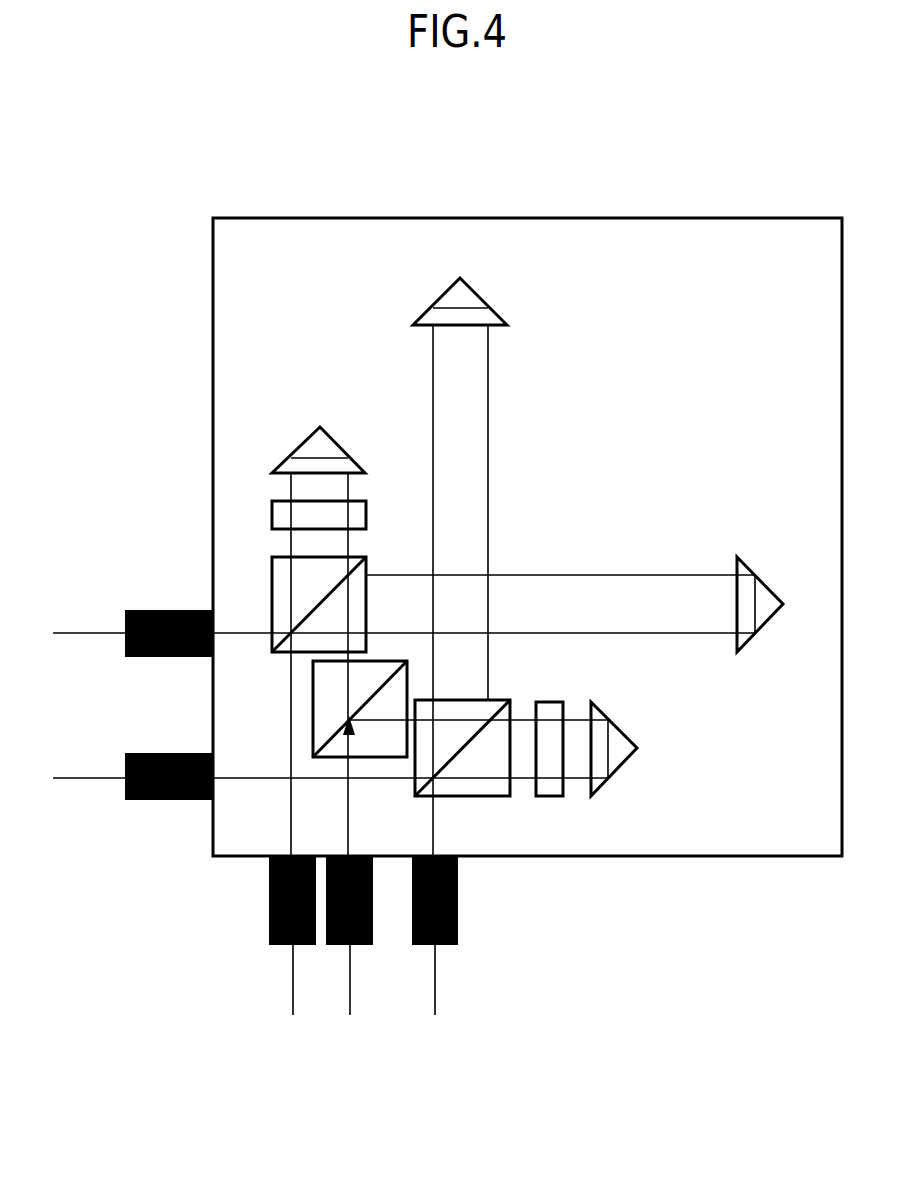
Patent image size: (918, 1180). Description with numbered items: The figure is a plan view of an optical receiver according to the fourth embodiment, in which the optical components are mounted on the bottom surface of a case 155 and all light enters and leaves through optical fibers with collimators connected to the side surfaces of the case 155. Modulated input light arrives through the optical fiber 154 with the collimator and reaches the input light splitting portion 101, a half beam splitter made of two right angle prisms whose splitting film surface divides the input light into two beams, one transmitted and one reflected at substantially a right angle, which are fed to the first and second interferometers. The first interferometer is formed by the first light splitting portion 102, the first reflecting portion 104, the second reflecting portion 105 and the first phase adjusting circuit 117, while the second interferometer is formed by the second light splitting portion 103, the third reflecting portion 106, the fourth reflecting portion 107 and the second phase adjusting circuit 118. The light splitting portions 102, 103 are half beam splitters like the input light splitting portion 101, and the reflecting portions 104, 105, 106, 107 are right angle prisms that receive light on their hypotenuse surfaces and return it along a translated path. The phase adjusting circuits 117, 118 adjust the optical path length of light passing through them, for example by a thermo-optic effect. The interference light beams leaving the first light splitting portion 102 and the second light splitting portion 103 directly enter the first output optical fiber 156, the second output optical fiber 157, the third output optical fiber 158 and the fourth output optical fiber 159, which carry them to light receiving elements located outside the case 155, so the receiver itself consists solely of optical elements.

The input light splitting portion 101 is at (387, 757).
The first light splitting portion 102 is at (503, 700).
The second light splitting portion 103 is at (366, 567).
The first reflecting portion 104 is at (627, 735).
The second reflecting portion 105 is at (472, 292).
The third reflecting portion 106 is at (333, 440).
The fourth reflecting portion 107 is at (768, 586).
The first phase adjusting circuit 117 is at (555, 702).
The second phase adjusting circuit 118 is at (366, 510).
The optical fiber with collimator 154 is at (358, 946).
The case 155 is at (213, 313).
The first output optical fiber 156 is at (447, 946).
The second output optical fiber 157 is at (125, 765).
The third output optical fiber 158 is at (281, 946).
The fourth output optical fiber 159 is at (125, 622).